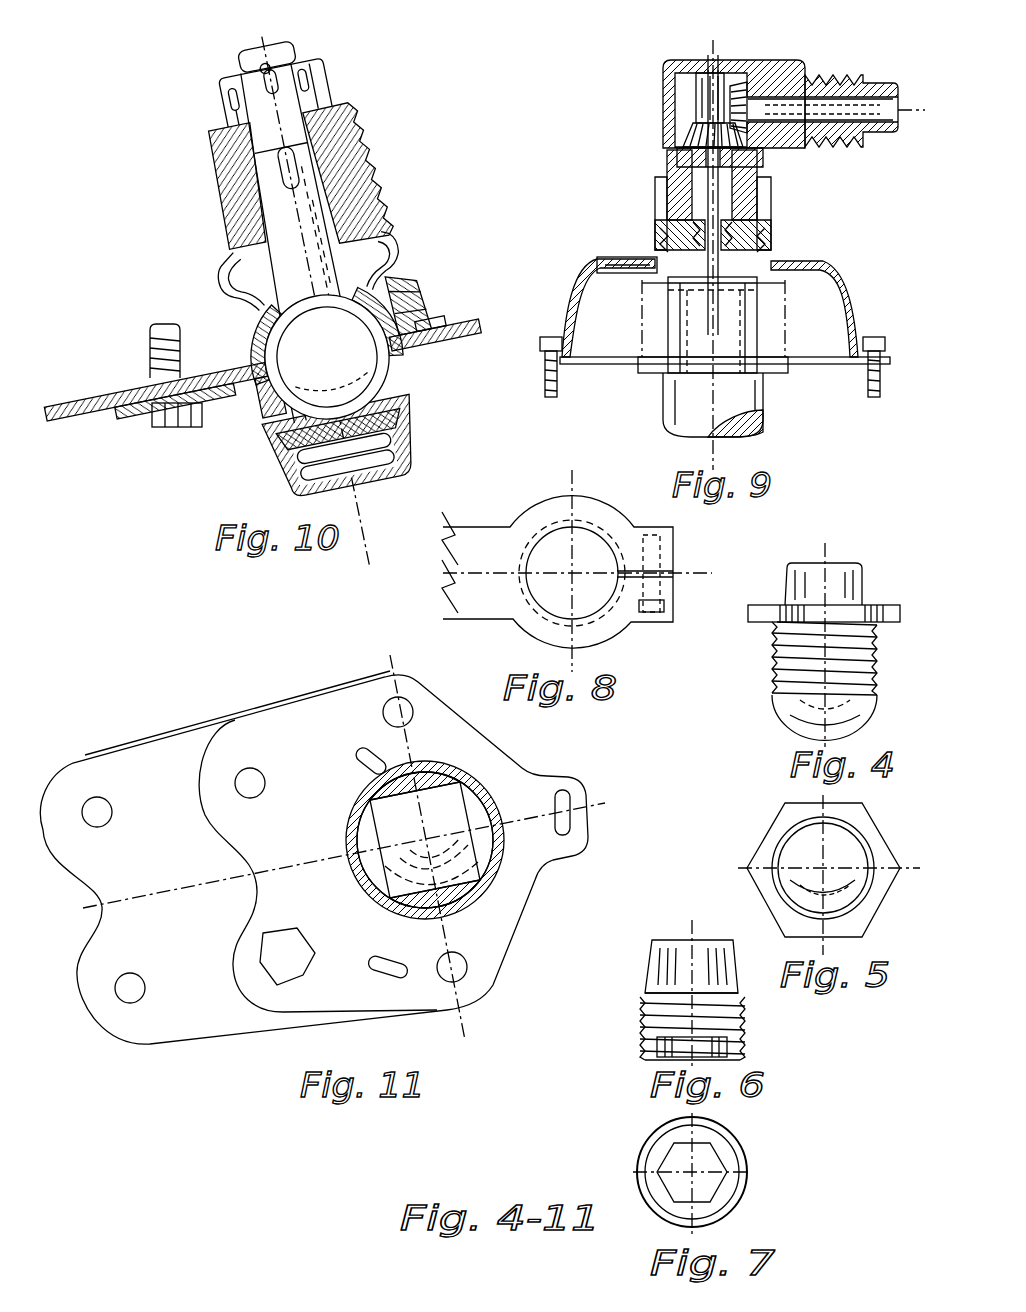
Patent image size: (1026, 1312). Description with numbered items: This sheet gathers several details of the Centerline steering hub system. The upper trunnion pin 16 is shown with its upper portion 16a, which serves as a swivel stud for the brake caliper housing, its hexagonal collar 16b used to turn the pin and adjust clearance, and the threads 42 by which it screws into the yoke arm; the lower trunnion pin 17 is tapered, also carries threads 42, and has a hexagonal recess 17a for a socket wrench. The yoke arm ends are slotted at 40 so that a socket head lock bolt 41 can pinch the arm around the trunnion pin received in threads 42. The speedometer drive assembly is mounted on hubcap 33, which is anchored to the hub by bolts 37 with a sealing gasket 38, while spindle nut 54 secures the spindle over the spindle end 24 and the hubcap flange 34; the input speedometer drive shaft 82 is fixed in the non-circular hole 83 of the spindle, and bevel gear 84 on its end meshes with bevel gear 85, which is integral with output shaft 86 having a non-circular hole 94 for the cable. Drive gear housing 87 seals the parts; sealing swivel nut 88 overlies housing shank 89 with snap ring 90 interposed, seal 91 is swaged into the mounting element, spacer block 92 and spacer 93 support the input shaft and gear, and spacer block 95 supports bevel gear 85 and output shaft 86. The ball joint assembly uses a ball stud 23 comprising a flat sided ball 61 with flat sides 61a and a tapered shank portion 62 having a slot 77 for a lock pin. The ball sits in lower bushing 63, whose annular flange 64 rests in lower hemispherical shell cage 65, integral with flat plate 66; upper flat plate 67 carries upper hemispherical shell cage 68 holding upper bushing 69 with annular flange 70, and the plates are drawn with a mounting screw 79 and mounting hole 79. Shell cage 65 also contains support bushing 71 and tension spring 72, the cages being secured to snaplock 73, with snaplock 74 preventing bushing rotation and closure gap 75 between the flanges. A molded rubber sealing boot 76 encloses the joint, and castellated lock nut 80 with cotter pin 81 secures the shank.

In FIG. 4, the upper trunnion pin 16 is at (807, 707).
In FIG. 4, the upper portion of trunnion pin 16a is at (845, 587).
In FIG. 4, the hexagonal collar 16b is at (887, 617).
In FIG. 6, the lower trunnion pin 17 is at (670, 962).
In FIG. 7, the hexagonal recess 17a is at (683, 1162).
In FIG. 10, the ball stud 23 is at (317, 390).
In FIG. 9, the shaft 24 is at (693, 402).
In FIG. 9, the hubcap 33 is at (853, 292).
In FIG. 9, the flange 34 is at (637, 257).
In FIG. 9, the bolts 37 is at (877, 340).
In FIG. 9, the sealing gasket 38 is at (823, 364).
In FIG. 8, the slot 40 is at (663, 575).
In FIG. 8, the socket head lock bolt 41 is at (643, 607).
In FIG. 8, the threads 42 is at (530, 610).
In FIG. 4, the threads 42 is at (870, 693).
In FIG. 6, the threads 42 is at (650, 1050).
In FIG. 9, the spindle nut 54 is at (657, 308).
In FIG. 11, the flat sided ball 61 is at (397, 840).
In FIG. 10, the flat sides 61a is at (357, 338).
In FIG. 11, the flat sides 61a is at (440, 780).
In FIG. 10, the tapered shank portion 62 is at (307, 162).
In FIG. 10, the lower bushing 63 is at (413, 400).
In FIG. 11, the lower bushing 63 is at (480, 893).
In FIG. 10, the annular flange 64 is at (440, 377).
In FIG. 10, the lower hemispherical shell cage 65 is at (217, 420).
In FIG. 10, the flat plate 66 is at (137, 417).
In FIG. 11, the flat plate 66 is at (230, 760).
In FIG. 10, the upper flat plate 67 is at (93, 393).
In FIG. 11, the upper flat plate 67 is at (100, 782).
In FIG. 10, the upper hemispherical shell cage 68 is at (383, 297).
In FIG. 10, the upper bushing 69 is at (397, 300).
In FIG. 10, the annular flange 70 is at (427, 333).
In FIG. 10, the support bushing 71 is at (407, 437).
In FIG. 10, the tension spring 72 is at (390, 467).
In FIG. 10, the snaplock 73 is at (467, 347).
In FIG. 11, the snaplock 73 is at (565, 805).
In FIG. 10, the snaplock 74 is at (250, 420).
In FIG. 10, the closure gap 75 is at (260, 423).
In FIG. 10, the molded rubber sealing boot 76 is at (217, 280).
In FIG. 10, the slot 77 is at (287, 177).
In FIG. 10, the screw 79 is at (155, 322).
In FIG. 11, the screw 79 is at (283, 963).
In FIG. 10, the castellated lock nut 80 is at (233, 105).
In FIG. 10, the cotter pin 81 is at (257, 68).
In FIG. 9, the input speedometer drive shaft 82 is at (719, 192).
In FIG. 9, the non-circular hole 83 is at (760, 308).
In FIG. 9, the bevel gear 84 is at (693, 127).
In FIG. 9, the bevel gear 85 is at (737, 85).
In FIG. 9, the output shaft 86 is at (852, 107).
In FIG. 9, the drive gear housing 87 is at (663, 60).
In FIG. 9, the sealing swivel nut 88 is at (657, 232).
In FIG. 9, the housing shank 89 is at (760, 238).
In FIG. 9, the snap ring 90 is at (663, 203).
In FIG. 9, the seal 91 is at (730, 232).
In FIG. 9, the spacer block 92 is at (753, 148).
In FIG. 9, the spacer 93 is at (703, 93).
In FIG. 9, the non-circular hole 94 is at (867, 124).
In FIG. 9, the spacer block 95 is at (773, 82).